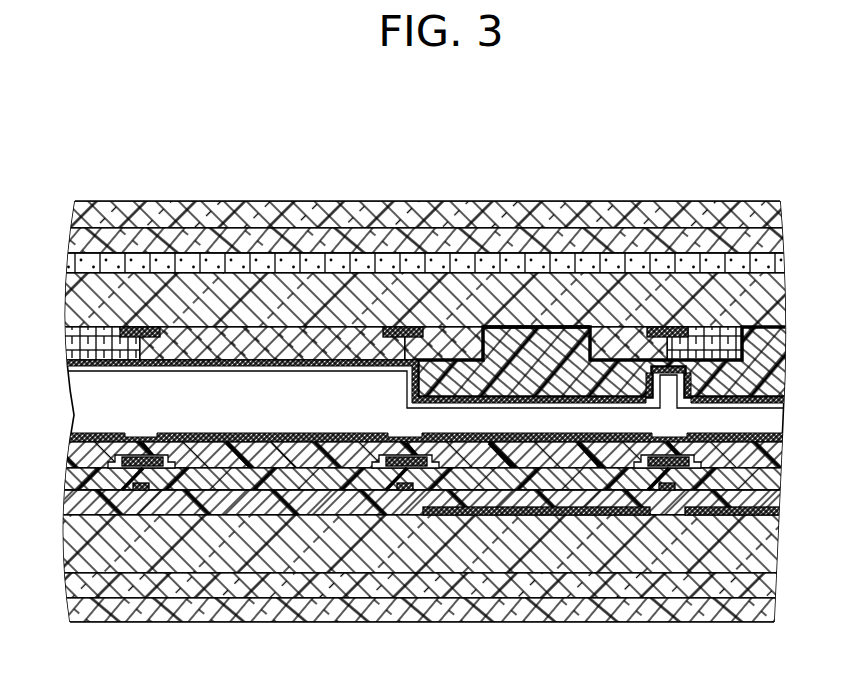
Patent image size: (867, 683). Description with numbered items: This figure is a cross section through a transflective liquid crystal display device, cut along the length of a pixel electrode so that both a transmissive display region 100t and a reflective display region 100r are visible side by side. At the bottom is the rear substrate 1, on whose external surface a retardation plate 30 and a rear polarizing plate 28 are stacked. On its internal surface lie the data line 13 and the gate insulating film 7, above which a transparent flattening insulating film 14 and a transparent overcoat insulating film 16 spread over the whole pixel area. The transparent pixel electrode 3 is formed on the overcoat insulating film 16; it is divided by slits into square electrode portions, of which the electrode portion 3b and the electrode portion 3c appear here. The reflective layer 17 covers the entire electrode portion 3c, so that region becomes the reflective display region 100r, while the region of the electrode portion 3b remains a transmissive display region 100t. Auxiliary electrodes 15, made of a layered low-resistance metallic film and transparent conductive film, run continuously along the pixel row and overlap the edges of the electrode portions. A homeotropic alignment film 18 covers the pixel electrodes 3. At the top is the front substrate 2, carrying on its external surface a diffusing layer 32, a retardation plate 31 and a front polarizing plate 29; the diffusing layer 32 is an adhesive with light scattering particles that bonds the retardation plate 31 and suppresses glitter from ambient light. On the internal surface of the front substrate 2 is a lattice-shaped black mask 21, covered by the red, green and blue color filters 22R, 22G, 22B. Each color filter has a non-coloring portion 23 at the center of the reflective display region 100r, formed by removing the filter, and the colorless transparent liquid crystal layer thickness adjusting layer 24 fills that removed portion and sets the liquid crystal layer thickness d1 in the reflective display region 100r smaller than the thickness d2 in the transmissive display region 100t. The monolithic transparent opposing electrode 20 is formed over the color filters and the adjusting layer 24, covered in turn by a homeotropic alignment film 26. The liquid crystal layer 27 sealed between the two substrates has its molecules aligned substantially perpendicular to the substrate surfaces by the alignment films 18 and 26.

The rear substrate 1 is at (77, 548).
The front substrate 2 is at (78, 303).
The pixel electrode 3 is at (238, 452).
The electrode portion 3b is at (289, 455).
The electrode portion 3c is at (592, 443).
The gate insulating film 7 is at (76, 510).
The data line 13 is at (142, 491).
The flattening insulating film 14 is at (758, 481).
The auxiliary electrode 15 is at (160, 469).
The overcoat insulating film 16 is at (757, 459).
The reflective layer 17 is at (470, 514).
The homeotropic alignment film 18 is at (214, 432).
The opposing electrode 20 is at (340, 336).
The black mask 21 is at (140, 334).
The blue color filter 22B is at (88, 348).
The green color filter 22G is at (462, 347).
The red color filter 22R is at (257, 347).
The non-coloring portion 23 is at (520, 318).
The liquid crystal layer thickness adjusting layer 24 is at (560, 380).
The homeotropic alignment film 26 is at (307, 374).
The liquid crystal layer 27 is at (539, 416).
The rear polarizing plate 28 is at (765, 611).
The front polarizing plate 29 is at (760, 216).
The retardation plate 30 is at (763, 586).
The retardation plate 31 is at (760, 241).
The diffusing layer 32 is at (758, 265).
The transmissive display region 100t is at (167, 186).
The reflective display region 100r is at (435, 186).
The liquid crystal layer thickness d1 is at (733, 415).
The liquid crystal layer thickness d2 is at (90, 380).